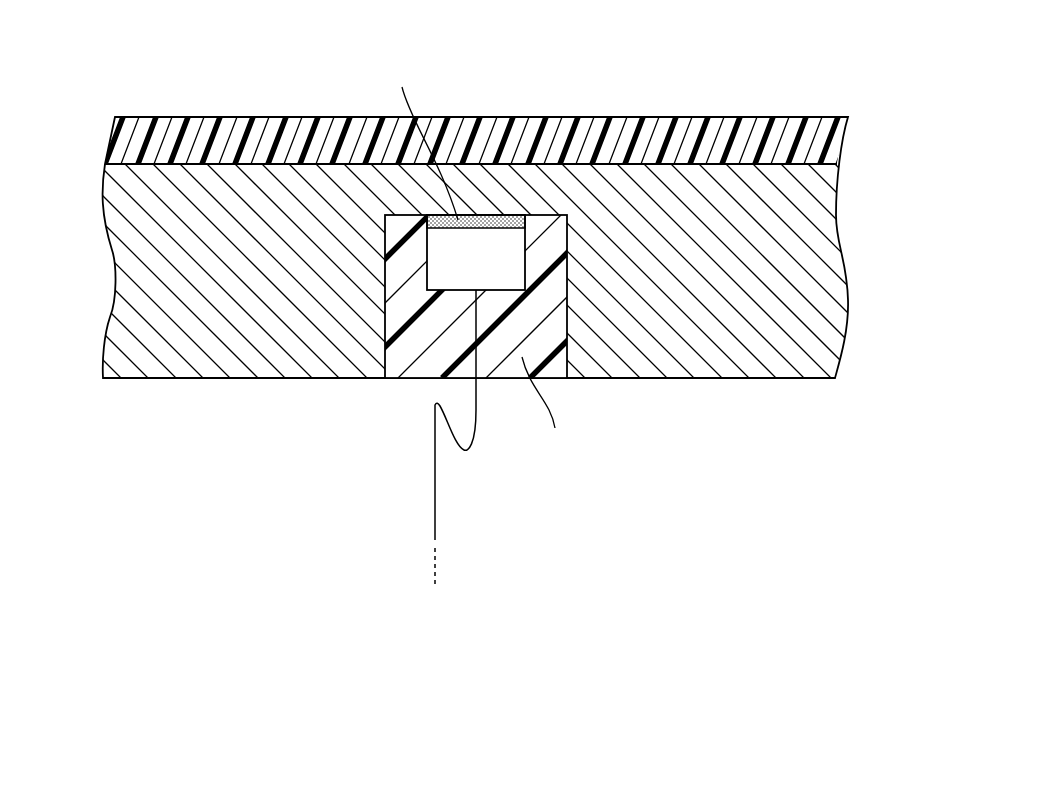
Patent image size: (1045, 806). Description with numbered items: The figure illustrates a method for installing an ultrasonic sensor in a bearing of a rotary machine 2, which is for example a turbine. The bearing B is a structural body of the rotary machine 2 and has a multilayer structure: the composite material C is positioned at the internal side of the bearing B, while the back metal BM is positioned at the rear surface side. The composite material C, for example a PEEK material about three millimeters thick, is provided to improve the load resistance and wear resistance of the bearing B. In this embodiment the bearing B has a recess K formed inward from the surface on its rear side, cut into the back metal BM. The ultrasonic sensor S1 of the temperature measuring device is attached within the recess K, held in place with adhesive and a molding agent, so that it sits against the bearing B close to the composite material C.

The rotary machine 2 is at (803, 88).
The bearing B is at (913, 125).
The composite material C is at (833, 142).
The back metal BM is at (833, 270).
The recess K is at (582, 283).
The ultrasonic sensor S1 is at (508, 242).